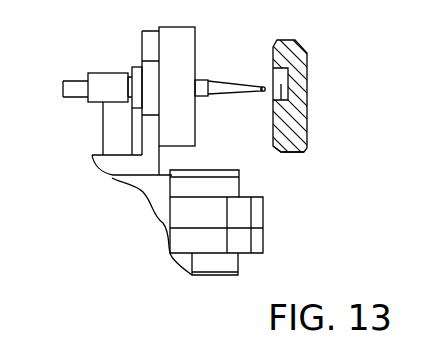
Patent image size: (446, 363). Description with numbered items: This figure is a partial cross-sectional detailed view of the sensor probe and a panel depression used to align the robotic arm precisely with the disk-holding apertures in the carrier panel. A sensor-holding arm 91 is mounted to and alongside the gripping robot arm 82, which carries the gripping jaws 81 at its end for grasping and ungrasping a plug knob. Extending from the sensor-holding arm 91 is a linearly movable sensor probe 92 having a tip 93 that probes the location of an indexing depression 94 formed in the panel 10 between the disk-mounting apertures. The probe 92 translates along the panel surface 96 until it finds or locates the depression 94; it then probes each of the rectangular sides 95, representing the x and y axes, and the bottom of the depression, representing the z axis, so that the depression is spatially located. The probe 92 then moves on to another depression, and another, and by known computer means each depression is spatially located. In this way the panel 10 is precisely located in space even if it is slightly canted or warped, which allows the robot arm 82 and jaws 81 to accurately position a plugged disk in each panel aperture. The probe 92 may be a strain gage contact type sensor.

The panel 10 is at (308, 54).
The gripping jaws 81 is at (263, 210).
The robot arm 82 is at (215, 263).
The sensor-holding arm 91 is at (148, 128).
The sensor probe 92 is at (243, 53).
The tip 93 is at (262, 93).
The indexing depression 94 is at (281, 93).
The rectangular sides 95 is at (285, 68).
The panel surface 96 is at (275, 150).